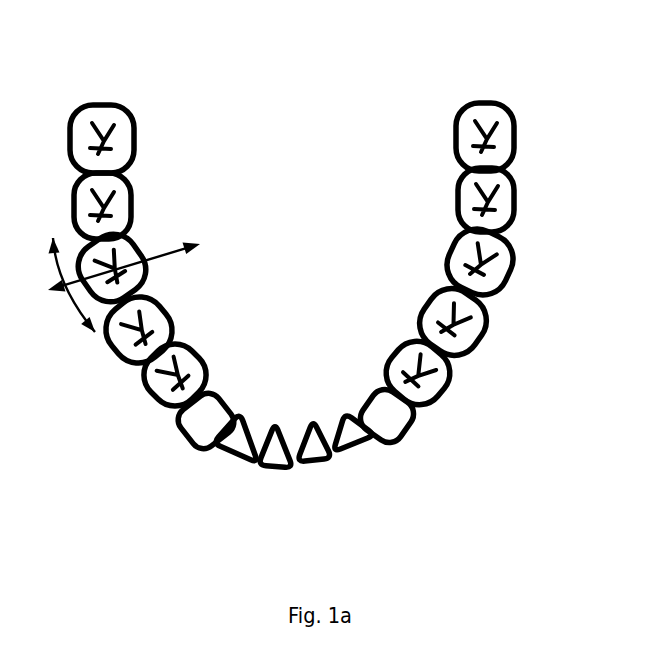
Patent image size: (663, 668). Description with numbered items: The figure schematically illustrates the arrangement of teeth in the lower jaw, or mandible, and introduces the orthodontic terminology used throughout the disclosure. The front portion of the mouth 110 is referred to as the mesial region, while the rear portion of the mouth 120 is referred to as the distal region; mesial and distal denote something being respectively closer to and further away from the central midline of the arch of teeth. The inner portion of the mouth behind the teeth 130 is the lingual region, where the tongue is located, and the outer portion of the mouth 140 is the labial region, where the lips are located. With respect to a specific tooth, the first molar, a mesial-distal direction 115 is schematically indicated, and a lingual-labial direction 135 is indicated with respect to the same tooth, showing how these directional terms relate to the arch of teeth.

The front portion of the mouth 110 is at (355, 495).
The mesial-distal direction 115 is at (70, 302).
The rear portion of the mouth 120 is at (523, 263).
The inner portion of the mouth behind the teeth 130 is at (285, 225).
The lingual-labial direction 135 is at (124, 253).
The outer portion of the mouth 140 is at (119, 418).